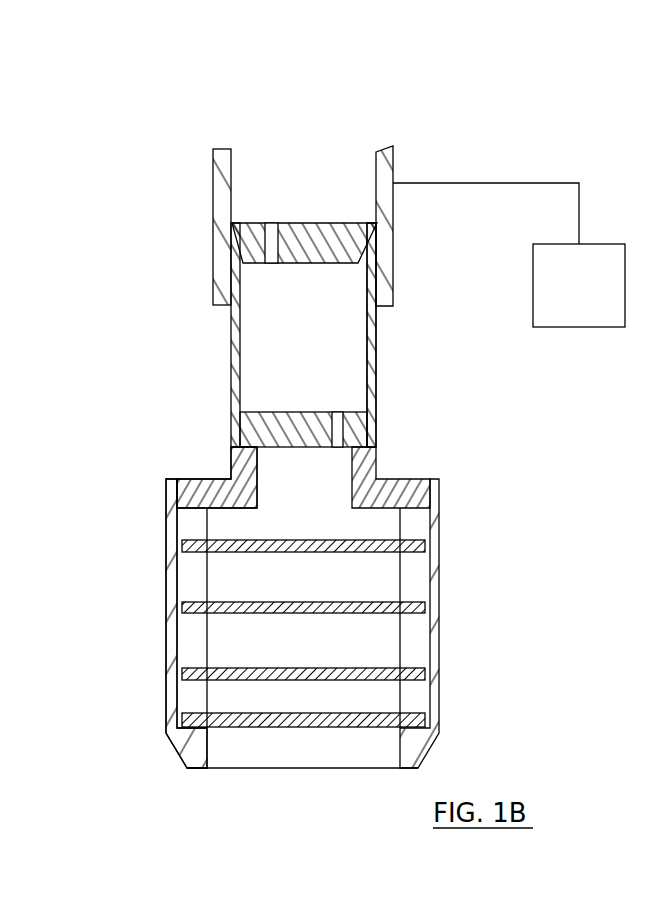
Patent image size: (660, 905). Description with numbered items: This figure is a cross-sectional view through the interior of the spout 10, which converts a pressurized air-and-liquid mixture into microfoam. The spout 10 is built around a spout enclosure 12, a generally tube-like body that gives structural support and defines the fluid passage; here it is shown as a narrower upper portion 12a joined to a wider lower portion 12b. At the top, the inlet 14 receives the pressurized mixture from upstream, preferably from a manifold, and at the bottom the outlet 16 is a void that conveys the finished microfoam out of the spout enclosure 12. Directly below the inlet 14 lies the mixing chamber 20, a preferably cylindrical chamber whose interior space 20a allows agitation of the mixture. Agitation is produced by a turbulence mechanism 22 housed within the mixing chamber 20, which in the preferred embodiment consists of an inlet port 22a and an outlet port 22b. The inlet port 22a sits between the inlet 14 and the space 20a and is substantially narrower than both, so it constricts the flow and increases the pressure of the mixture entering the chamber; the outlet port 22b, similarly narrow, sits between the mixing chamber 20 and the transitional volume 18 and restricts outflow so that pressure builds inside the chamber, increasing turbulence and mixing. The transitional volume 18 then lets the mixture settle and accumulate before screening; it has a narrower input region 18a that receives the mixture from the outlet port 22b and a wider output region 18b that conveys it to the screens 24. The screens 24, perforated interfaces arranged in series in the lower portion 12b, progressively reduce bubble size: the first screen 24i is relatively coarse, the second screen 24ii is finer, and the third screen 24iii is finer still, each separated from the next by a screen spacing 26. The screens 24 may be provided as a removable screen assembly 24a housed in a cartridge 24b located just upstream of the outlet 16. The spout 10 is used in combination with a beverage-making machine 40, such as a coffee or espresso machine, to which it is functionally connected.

The spout 10 is at (548, 101).
The spout enclosure 12 is at (85, 341).
The upper portion 12a is at (376, 382).
The lower portion 12b is at (167, 622).
The inlet 14 is at (293, 188).
The outlet 16 is at (315, 801).
The transitional volume 18 is at (336, 497).
The input region 18a is at (284, 476).
The output region 18b is at (282, 533).
The mixing chamber 20 is at (376, 330).
The space 20a is at (284, 348).
The turbulence mechanism 22 is at (252, 336).
The inlet port 22a is at (265, 240).
The outlet port 22b is at (345, 430).
The screens 24 is at (303, 618).
The first screen 24i is at (425, 546).
The second screen 24ii is at (425, 607).
The third screen 24iii is at (425, 673).
The screen assembly 24a is at (160, 551).
The cartridge 24b is at (174, 488).
The screen spacing 26 is at (288, 588).
The beverage-making machine 40 is at (566, 297).